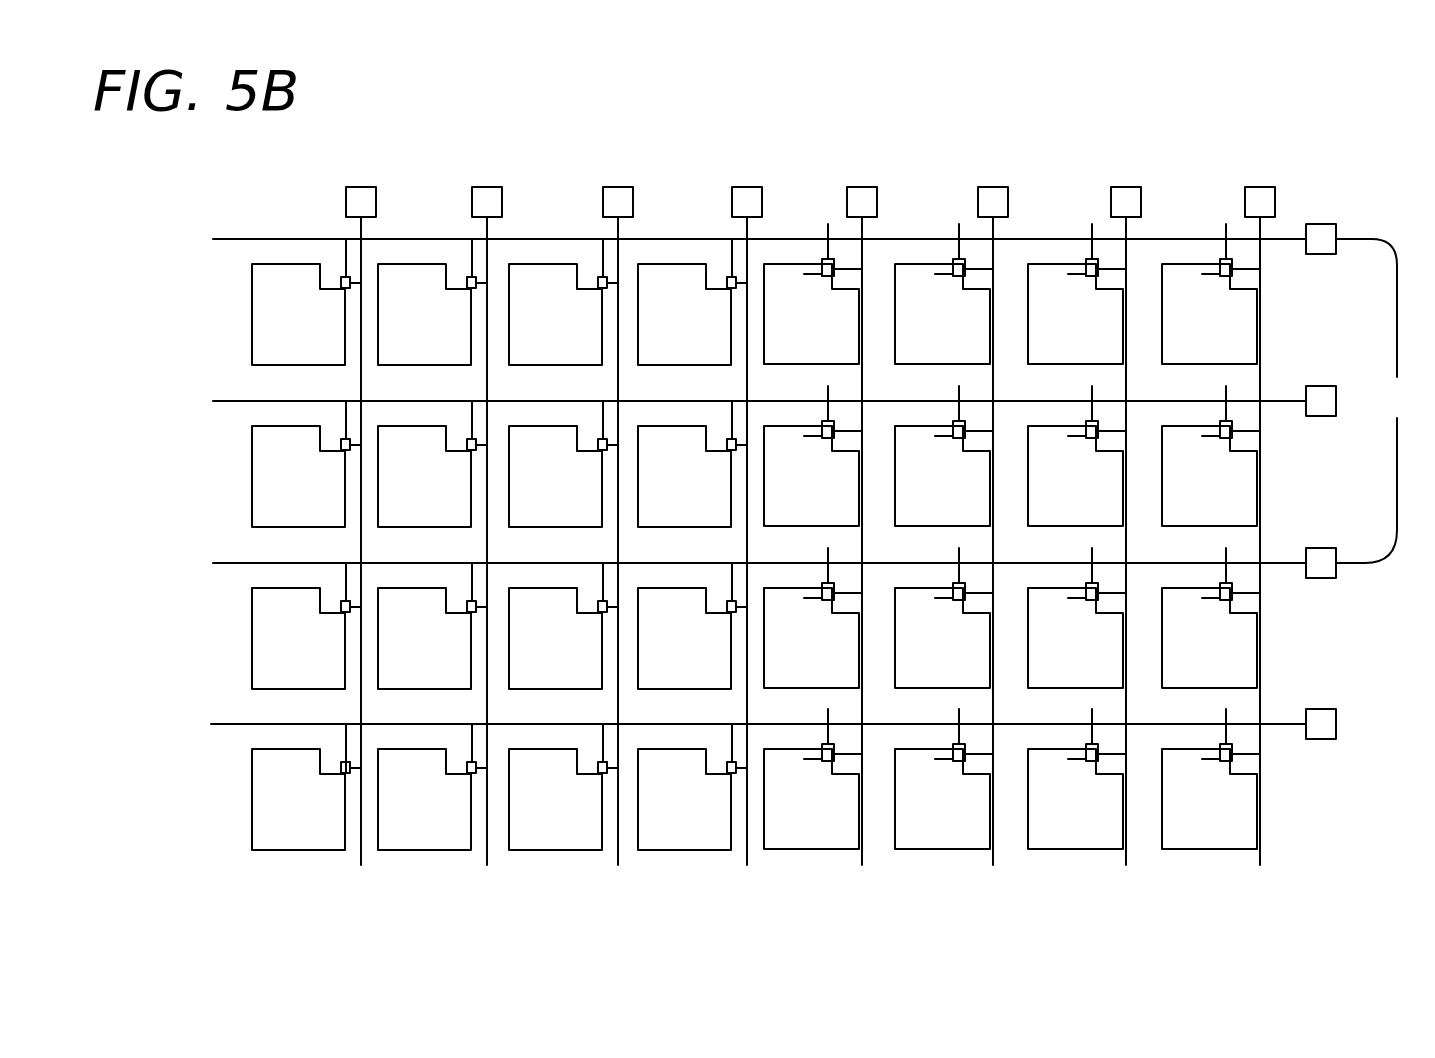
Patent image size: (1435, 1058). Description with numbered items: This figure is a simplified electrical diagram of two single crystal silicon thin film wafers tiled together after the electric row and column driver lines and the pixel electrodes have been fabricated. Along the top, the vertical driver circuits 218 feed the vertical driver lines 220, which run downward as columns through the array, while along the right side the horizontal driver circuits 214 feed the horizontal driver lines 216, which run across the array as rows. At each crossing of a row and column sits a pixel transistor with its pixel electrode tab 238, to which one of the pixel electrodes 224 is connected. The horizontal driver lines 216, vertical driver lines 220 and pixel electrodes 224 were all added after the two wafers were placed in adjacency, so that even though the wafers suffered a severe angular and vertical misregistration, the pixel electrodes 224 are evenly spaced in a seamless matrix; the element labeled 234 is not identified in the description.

The horizontal driver circuits 214 is at (1322, 403).
The horizontal driver lines 216 is at (211, 724).
The vertical driver circuits 218 is at (617, 198).
The vertical driver lines 220 is at (608, 853).
The pixel electrodes 224 is at (263, 830).
The pixel contact 234 is at (352, 768).
The pixel electrode tabs 238 is at (332, 612).